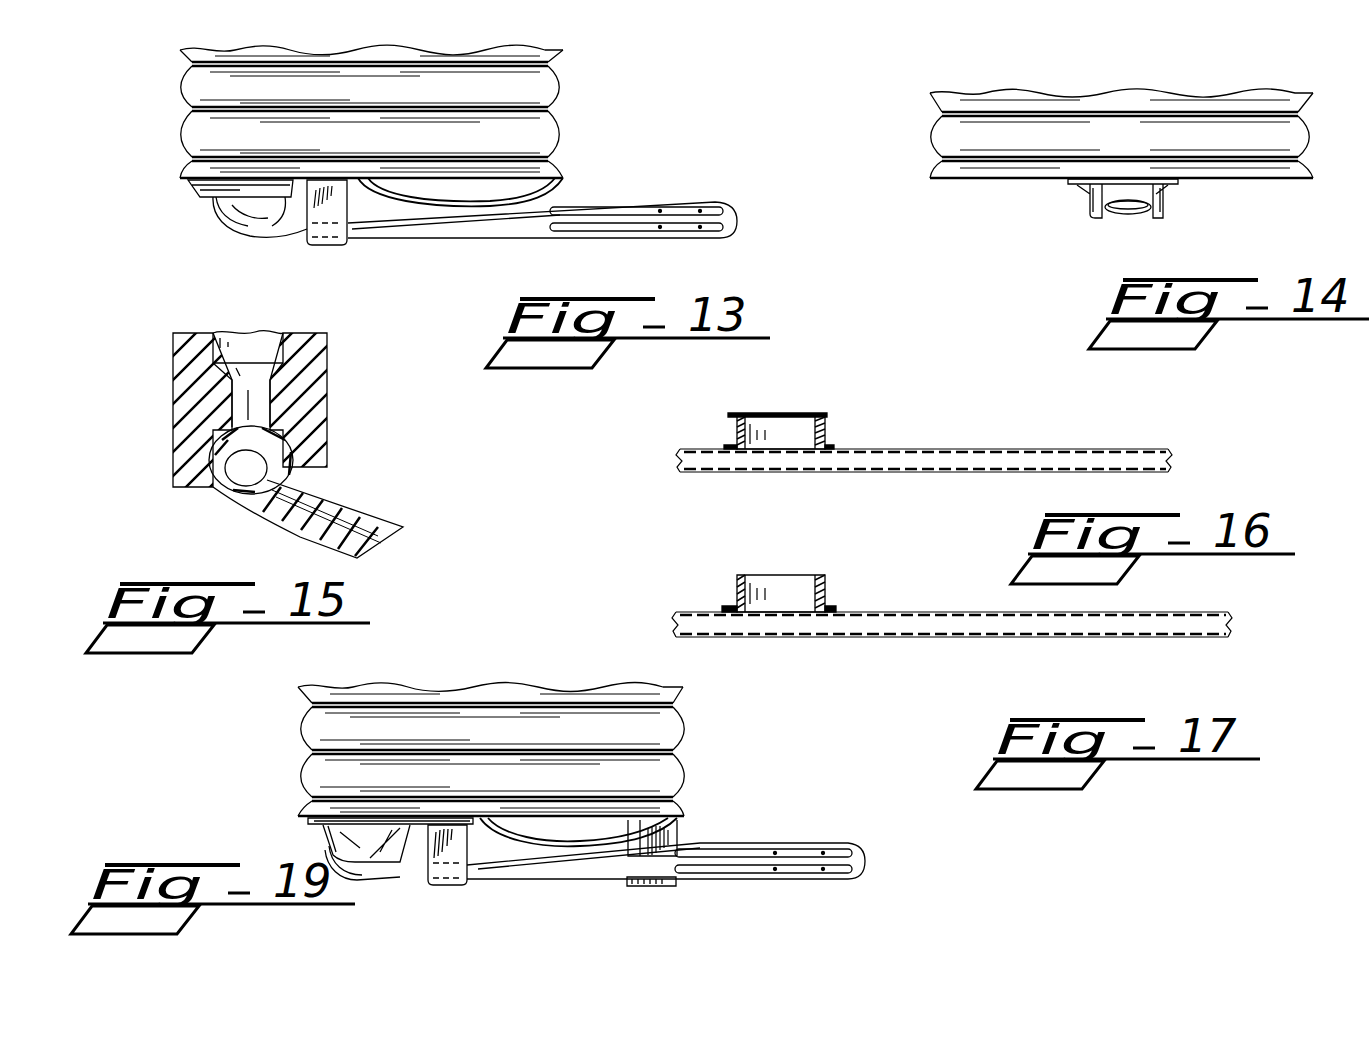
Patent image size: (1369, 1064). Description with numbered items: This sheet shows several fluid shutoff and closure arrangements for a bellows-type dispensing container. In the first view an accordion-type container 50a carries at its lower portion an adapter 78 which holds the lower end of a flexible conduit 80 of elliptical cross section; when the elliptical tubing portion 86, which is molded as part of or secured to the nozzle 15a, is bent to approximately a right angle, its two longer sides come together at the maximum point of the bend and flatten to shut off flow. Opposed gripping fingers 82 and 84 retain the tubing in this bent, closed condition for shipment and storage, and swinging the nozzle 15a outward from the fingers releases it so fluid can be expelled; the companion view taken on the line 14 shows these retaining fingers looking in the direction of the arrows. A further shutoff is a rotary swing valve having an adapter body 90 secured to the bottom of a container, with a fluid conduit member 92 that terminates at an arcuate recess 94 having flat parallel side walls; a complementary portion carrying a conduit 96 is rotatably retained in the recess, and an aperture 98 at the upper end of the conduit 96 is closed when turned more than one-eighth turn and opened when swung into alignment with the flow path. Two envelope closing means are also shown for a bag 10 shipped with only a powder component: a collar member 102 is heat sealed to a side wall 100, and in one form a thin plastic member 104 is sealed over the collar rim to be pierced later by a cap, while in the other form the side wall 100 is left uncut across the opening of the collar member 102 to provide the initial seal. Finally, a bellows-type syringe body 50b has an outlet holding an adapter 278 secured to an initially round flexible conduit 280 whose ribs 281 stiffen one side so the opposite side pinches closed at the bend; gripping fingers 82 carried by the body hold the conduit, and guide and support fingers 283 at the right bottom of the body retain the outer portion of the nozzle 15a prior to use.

In FIG. 13, the accordion-type container 50a is at (639, 83).
In FIG. 14, the accordion-type container 50a is at (943, 93).
In FIG. 19, the bellows-type syringe body 50b is at (748, 756).
In FIG. 13, the adapter 78 is at (190, 190).
In FIG. 13, the flexible conduit 80 is at (227, 230).
In FIG. 13, the gripping finger 82 is at (325, 248).
In FIG. 14, the gripping finger 82 is at (1088, 203).
In FIG. 19, the gripping finger 82 is at (458, 884).
In FIG. 14, the gripping finger 84 is at (1164, 211).
In FIG. 13, the elliptical tubing portion 86 is at (284, 236).
In FIG. 14, the elliptical tubing portion 86 is at (1128, 215).
In FIG. 13, the section line 14 is at (364, 293).
In FIG. 13, the nozzle 15a is at (702, 193).
In FIG. 19, the nozzle 15a is at (882, 818).
In FIG. 15, the adapter body 90 is at (185, 408).
In FIG. 15, the fluid conduit member 92 is at (226, 333).
In FIG. 15, the arcuate recess 94 is at (297, 456).
In FIG. 15, the conduit 96 is at (301, 538).
In FIG. 15, the aperture 98 is at (212, 460).
In FIG. 16, the side wall 100 is at (1078, 449).
In FIG. 17, the side wall 100 is at (1043, 612).
In FIG. 16, the collar member 102 is at (737, 430).
In FIG. 17, the collar member 102 is at (737, 596).
In FIG. 16, the thin plastic member 104 is at (768, 413).
In FIG. 16, the bag 10 is at (1034, 402).
In FIG. 17, the bag 10 is at (930, 584).
In FIG. 19, the adapter 278 is at (322, 838).
In FIG. 19, the flexible conduit 280 is at (410, 878).
In FIG. 19, the ribs 281 is at (340, 865).
In FIG. 19, the guide and support fingers 283 is at (628, 887).